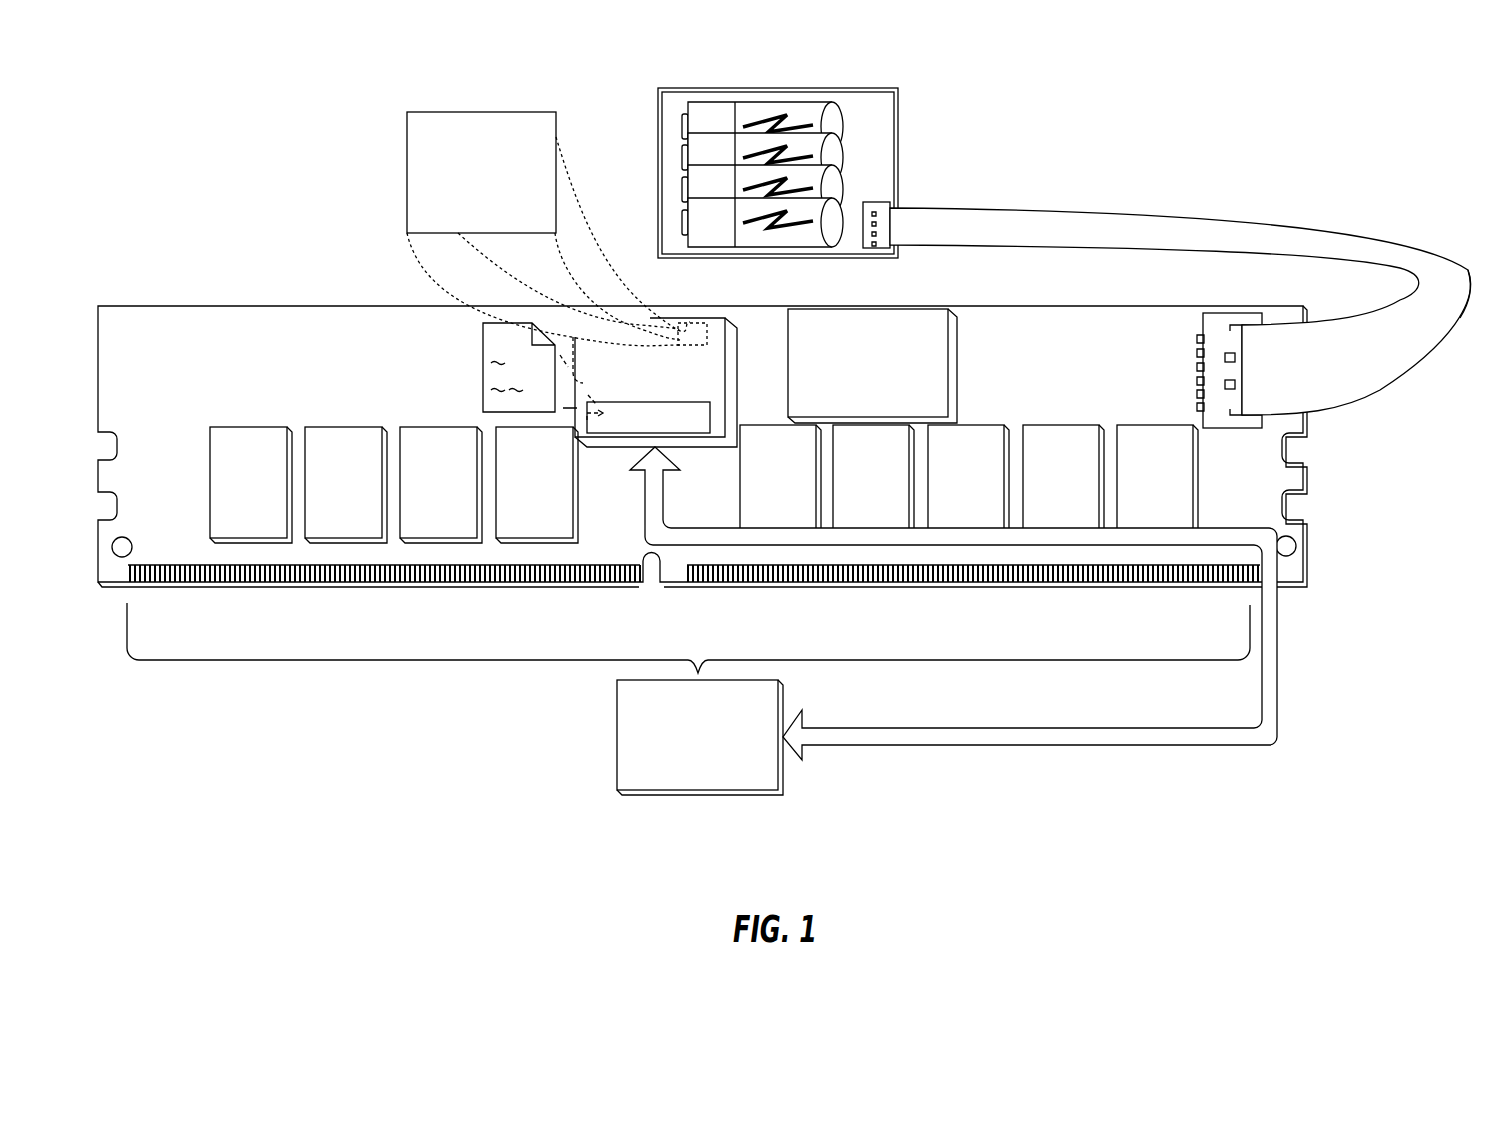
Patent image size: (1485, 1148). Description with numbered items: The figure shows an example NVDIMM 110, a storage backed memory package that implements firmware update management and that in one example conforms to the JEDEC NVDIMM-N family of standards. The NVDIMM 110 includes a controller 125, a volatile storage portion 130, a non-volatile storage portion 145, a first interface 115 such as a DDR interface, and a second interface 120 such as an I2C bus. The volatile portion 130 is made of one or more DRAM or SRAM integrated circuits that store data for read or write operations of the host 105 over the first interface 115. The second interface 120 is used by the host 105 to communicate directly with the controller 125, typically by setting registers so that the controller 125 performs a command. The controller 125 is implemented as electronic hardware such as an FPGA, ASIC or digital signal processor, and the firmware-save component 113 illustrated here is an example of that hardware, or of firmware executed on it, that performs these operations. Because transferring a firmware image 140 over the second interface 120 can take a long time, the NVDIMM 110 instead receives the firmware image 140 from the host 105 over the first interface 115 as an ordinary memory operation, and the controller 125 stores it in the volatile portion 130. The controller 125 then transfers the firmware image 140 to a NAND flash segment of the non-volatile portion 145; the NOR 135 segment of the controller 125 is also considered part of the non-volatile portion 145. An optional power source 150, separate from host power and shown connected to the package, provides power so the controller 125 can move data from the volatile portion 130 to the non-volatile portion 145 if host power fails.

The host 105 is at (617, 730).
The NVDIMM 110 is at (215, 306).
The firmware-save component 113 is at (407, 112).
The first interface 115 is at (290, 660).
The second interface 120 is at (1063, 728).
The controller 125 is at (727, 318).
The volatile storage portion 130 is at (247, 428).
The NOR 135 is at (712, 415).
The firmware image 140 is at (485, 348).
The non-volatile storage portion 145 is at (937, 309).
The power source 150 is at (658, 90).